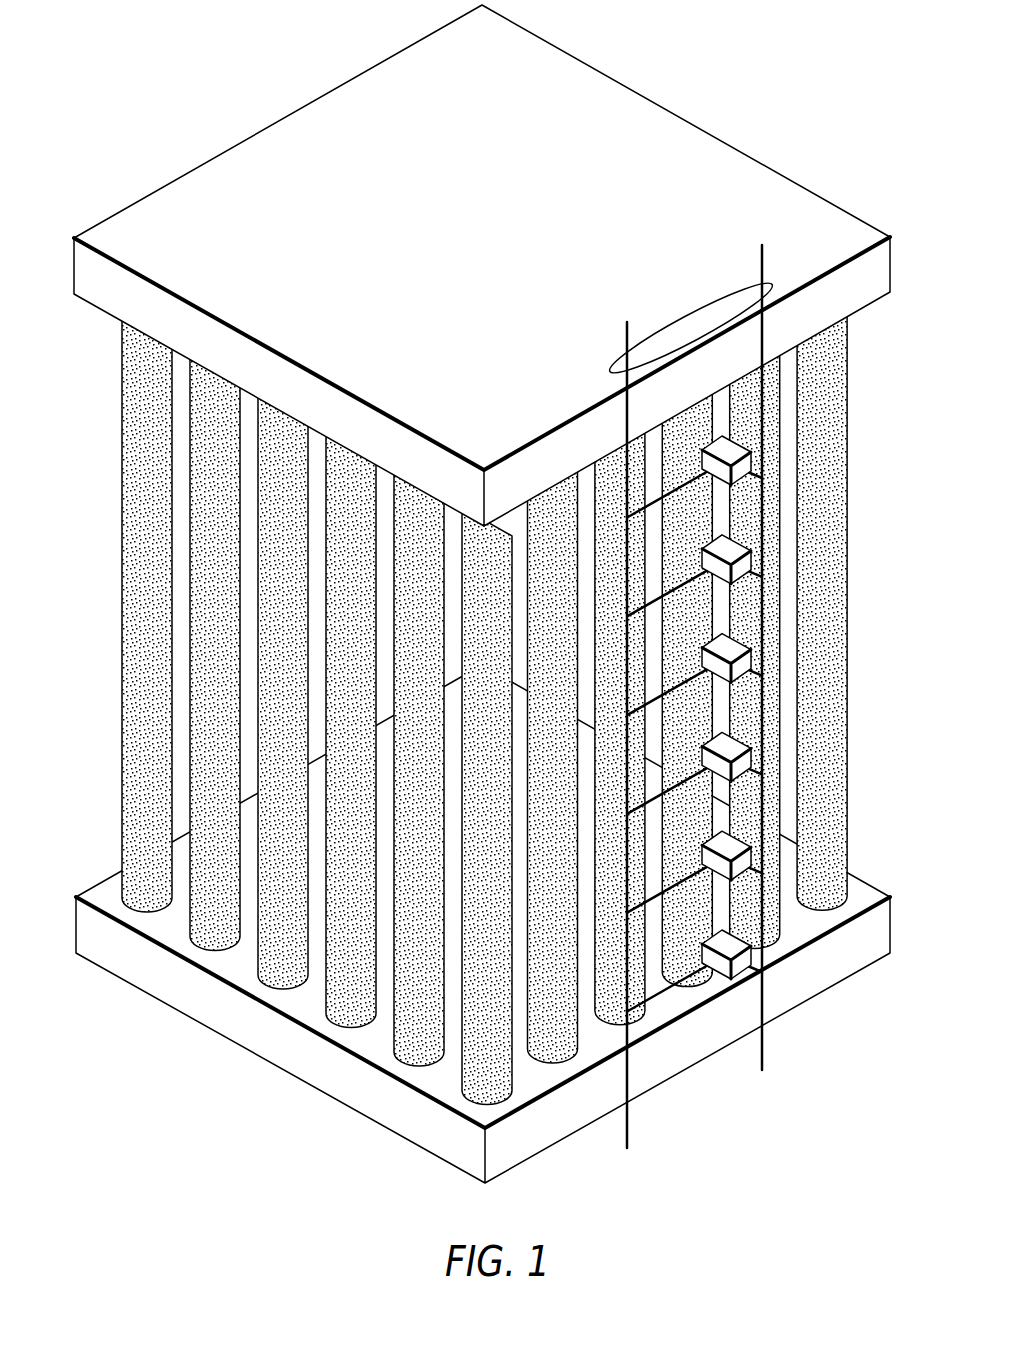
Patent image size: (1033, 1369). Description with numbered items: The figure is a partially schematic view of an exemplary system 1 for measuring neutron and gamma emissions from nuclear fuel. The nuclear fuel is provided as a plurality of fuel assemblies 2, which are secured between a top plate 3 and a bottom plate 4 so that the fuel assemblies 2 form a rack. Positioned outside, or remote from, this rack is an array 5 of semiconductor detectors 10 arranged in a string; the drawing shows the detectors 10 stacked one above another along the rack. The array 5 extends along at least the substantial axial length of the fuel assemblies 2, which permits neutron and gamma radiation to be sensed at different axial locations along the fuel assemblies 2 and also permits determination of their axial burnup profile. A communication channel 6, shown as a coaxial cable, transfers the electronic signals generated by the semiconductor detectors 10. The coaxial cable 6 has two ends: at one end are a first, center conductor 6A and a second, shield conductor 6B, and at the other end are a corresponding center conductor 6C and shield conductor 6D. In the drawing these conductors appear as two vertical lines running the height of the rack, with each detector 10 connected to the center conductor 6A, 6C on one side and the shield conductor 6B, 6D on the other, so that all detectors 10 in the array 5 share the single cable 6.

The system 1 is at (243, 121).
The fuel assembly 2 is at (138, 545).
The top plate 3 is at (104, 290).
The bottom plate 4 is at (107, 948).
The array 5 is at (766, 659).
The communication channel 6 is at (610, 375).
The first conductor 6A is at (760, 263).
The second conductor 6B is at (626, 330).
The first conductor 6C is at (765, 1060).
The second conductor 6D is at (630, 1137).
The semiconductor detector 10 is at (730, 451).